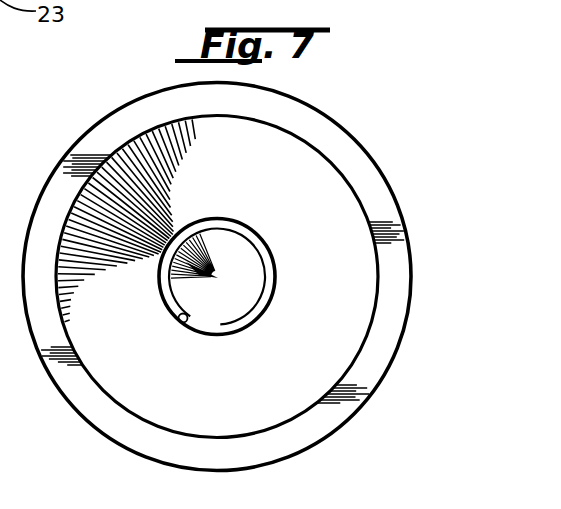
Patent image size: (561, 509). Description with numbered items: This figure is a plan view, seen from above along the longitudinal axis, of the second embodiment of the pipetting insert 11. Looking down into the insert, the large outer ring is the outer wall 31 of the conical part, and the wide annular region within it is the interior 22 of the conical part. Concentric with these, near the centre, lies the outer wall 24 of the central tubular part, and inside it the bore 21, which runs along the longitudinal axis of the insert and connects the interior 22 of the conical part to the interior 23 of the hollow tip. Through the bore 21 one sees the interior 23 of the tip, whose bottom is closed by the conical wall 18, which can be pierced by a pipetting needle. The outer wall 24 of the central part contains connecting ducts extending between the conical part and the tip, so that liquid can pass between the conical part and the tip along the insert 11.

The pipetting insert 11 is at (85, 431).
The conical wall 18 is at (244, 276).
The bore 21 is at (257, 238).
The interior of the conical part 22 is at (303, 167).
The interior of the hollow tip 23 is at (214, 242).
The outer wall 24 is at (183, 323).
The outer wall of the conical part 31 is at (142, 400).